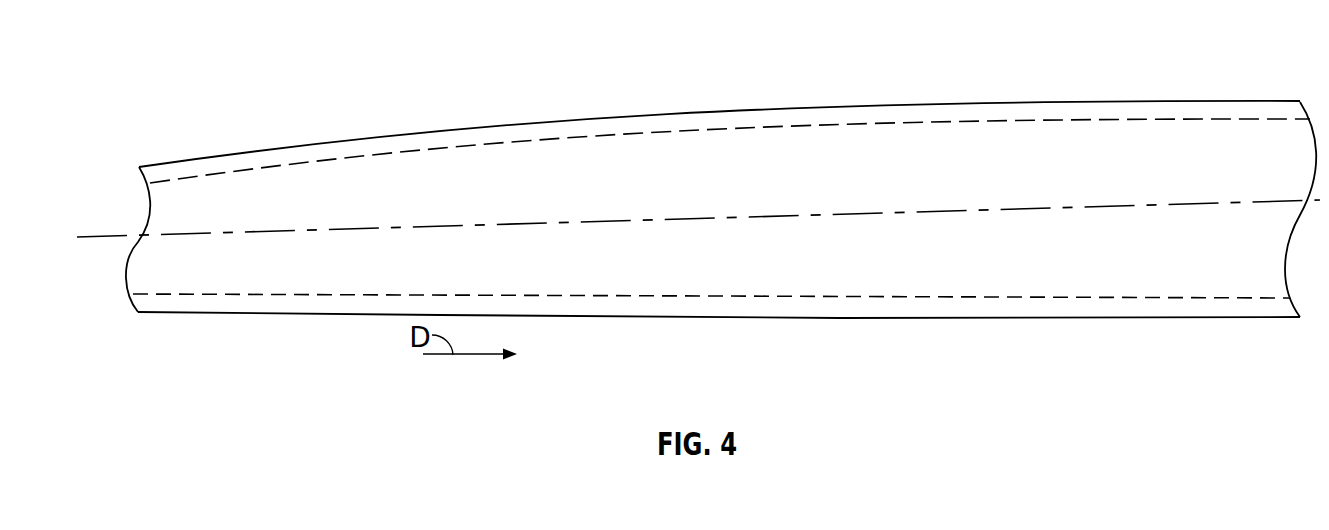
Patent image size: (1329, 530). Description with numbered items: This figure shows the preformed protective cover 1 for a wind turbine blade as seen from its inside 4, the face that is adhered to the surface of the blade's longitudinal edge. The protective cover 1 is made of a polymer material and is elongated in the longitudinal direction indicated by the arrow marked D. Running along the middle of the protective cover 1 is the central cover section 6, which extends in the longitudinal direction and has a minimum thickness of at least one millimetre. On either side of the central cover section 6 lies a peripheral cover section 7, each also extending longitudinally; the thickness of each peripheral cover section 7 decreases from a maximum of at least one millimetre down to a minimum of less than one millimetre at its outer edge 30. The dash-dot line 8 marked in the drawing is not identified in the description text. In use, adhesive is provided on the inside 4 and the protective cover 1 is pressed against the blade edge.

The protective cover 1 is at (714, 82).
The inside 4 is at (358, 185).
The central cover section 6 is at (950, 145).
The peripheral cover section 7 is at (523, 128).
The longitudinal axis 8 is at (970, 212).
The outer edge 30 is at (603, 315).